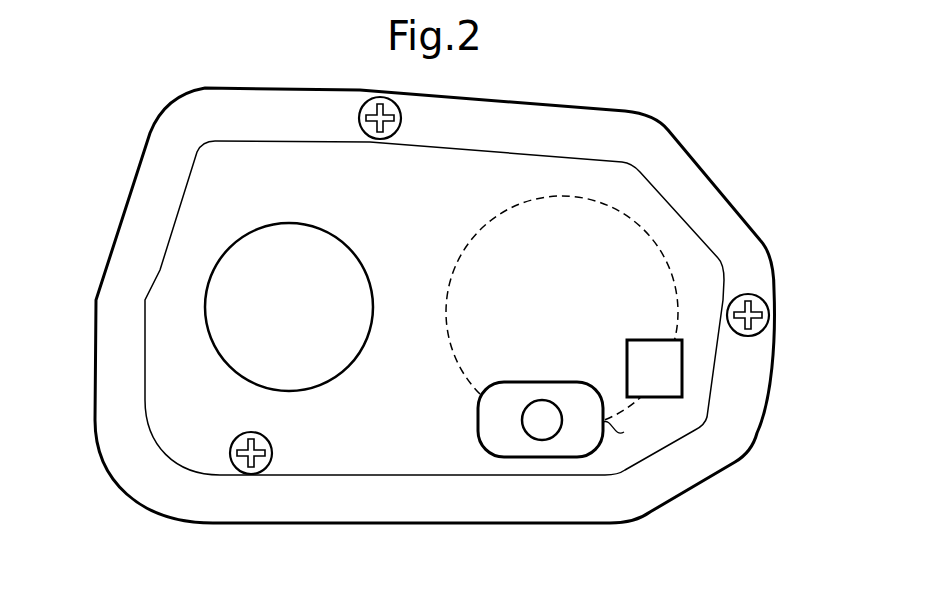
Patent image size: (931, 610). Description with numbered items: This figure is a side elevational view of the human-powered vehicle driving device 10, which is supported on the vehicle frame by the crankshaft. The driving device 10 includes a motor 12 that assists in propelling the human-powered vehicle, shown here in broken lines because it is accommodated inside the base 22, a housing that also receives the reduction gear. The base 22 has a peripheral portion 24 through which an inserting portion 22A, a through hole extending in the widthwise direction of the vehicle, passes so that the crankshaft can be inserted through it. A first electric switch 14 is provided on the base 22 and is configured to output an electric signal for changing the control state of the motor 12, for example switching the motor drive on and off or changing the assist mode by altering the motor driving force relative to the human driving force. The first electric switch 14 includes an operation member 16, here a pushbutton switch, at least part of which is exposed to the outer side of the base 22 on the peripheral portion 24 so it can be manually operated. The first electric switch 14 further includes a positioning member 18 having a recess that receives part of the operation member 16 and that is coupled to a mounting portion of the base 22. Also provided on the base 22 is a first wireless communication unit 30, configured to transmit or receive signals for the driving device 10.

The human-powered vehicle driving device 10 is at (434, 278).
The motor 12 is at (647, 227).
The first electric switch 14 is at (562, 374).
The operation member 16 is at (524, 404).
The positioning member 18 is at (628, 434).
The base 22 is at (724, 180).
The inserting portion 22A is at (344, 252).
The peripheral portion 24 is at (566, 110).
The first wireless communication unit 30 is at (682, 373).